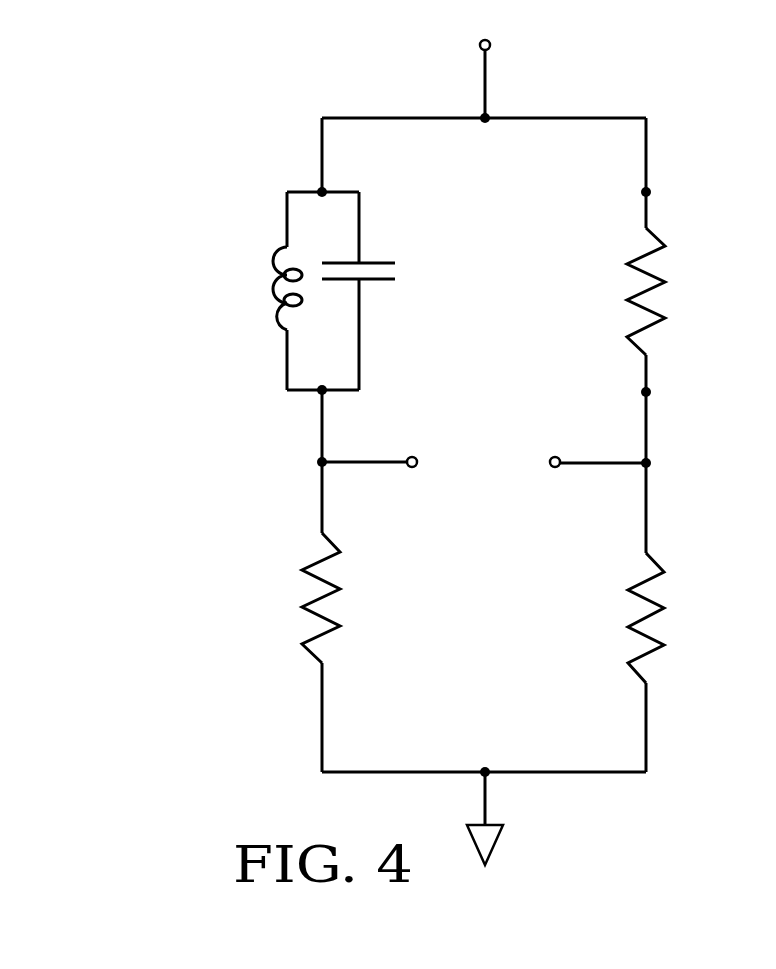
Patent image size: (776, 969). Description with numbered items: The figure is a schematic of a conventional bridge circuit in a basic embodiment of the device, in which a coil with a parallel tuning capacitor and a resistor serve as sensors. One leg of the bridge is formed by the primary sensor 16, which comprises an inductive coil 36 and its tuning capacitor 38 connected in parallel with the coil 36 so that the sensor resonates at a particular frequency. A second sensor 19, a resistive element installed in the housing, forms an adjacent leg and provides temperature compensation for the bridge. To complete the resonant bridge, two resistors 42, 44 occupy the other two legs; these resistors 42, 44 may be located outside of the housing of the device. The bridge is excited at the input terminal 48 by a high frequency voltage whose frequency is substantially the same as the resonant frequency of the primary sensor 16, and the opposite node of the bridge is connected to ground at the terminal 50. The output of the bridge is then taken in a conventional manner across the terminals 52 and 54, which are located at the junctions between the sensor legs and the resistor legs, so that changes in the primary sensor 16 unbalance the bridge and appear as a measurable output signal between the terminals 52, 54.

The primary sensor 16 is at (320, 291).
The second sensor 19 is at (657, 310).
The inductive coil 36 is at (268, 288).
The tuning capacitor 38 is at (382, 262).
The resistor 42 is at (312, 615).
The resistor 44 is at (650, 657).
The input terminal 48 is at (487, 87).
The ground terminal 50 is at (487, 803).
The output terminal 52 is at (414, 466).
The output terminal 54 is at (557, 470).